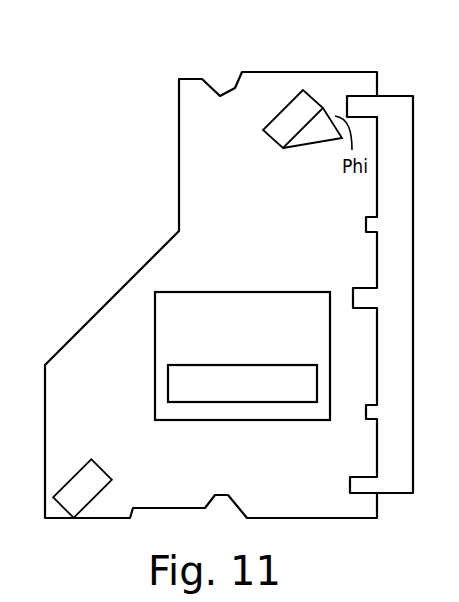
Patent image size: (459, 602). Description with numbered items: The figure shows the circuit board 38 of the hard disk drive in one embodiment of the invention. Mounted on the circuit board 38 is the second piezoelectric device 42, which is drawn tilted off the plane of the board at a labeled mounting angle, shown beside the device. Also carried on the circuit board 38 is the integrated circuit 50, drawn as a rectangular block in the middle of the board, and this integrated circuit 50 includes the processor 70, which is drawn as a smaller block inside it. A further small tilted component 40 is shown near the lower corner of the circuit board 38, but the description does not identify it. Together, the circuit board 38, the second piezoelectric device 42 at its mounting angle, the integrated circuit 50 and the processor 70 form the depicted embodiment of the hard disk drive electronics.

The circuit board 38 is at (291, 50).
The second piezoelectric device 42 is at (302, 119).
The integrated circuit 50 is at (233, 356).
The processor 70 is at (242, 383).
The component 40 is at (82, 488).